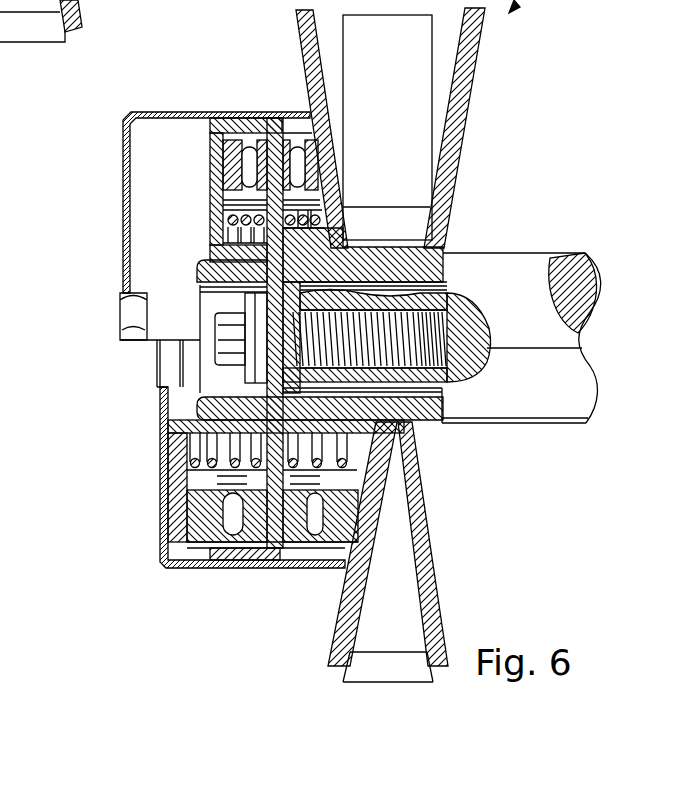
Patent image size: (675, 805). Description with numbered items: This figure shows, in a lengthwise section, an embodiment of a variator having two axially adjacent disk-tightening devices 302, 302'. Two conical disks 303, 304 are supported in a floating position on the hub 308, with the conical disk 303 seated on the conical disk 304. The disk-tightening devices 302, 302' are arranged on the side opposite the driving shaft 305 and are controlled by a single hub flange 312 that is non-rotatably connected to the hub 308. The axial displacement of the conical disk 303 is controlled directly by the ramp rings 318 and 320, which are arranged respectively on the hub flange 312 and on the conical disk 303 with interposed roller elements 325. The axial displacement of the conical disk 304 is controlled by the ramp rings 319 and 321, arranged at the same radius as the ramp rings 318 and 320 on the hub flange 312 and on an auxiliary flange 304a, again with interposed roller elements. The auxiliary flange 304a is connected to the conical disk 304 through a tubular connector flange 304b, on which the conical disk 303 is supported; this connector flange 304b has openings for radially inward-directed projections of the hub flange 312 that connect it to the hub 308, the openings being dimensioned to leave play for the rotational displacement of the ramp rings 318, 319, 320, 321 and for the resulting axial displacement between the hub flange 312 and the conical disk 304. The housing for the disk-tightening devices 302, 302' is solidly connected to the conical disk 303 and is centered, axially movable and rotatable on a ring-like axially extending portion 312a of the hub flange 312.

The disk-tightening device 302 is at (203, 356).
The disk-tightening device 302' is at (252, 503).
The conical disk 303 is at (304, 42).
The conical disk 304 is at (448, 164).
The auxiliary flange 304a is at (178, 457).
The connector flange 304b is at (360, 428).
The driving shaft 305 is at (473, 263).
The hub 308 is at (442, 252).
The hub flange 312 is at (258, 551).
The ring-like axially extending portion 312a is at (212, 128).
The ramp ring 318 is at (286, 546).
The ramp ring 319 is at (183, 560).
The ramp ring 320 is at (316, 532).
The ramp ring 321 is at (187, 519).
The roller elements 325 is at (316, 508).